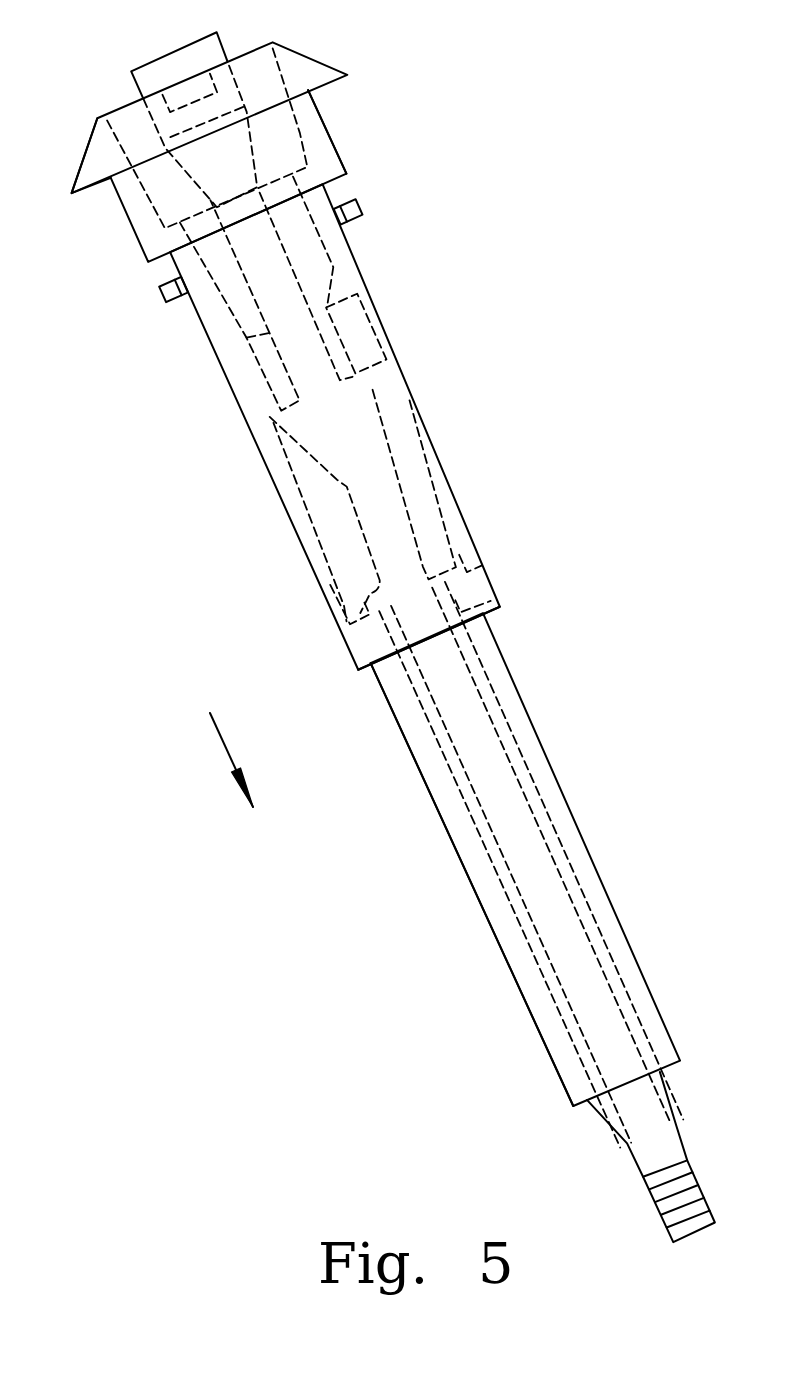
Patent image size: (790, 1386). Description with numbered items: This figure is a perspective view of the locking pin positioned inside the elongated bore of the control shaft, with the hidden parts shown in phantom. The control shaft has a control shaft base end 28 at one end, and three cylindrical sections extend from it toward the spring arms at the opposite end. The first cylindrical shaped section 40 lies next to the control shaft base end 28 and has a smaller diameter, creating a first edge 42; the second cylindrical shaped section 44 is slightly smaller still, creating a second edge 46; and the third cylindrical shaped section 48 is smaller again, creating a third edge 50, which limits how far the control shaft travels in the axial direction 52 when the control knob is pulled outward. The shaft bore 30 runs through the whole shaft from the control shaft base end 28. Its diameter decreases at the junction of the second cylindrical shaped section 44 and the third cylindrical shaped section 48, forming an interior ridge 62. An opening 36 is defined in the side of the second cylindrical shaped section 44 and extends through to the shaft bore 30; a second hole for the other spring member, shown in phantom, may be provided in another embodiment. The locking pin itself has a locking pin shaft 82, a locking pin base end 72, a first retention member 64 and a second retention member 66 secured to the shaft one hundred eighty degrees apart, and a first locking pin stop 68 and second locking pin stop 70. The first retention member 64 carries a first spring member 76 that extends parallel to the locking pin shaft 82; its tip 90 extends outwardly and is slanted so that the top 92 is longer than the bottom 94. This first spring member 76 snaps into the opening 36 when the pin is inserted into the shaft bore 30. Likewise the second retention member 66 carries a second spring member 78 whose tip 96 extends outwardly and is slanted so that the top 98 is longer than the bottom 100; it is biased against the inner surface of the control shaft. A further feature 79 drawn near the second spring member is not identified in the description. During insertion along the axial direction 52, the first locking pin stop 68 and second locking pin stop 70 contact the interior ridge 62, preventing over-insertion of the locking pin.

The control shaft base end 28 is at (100, 150).
The shaft bore 30 is at (190, 306).
The opening 36 is at (385, 337).
The first cylindrical shaped section 40 is at (316, 146).
The first edge 42 is at (350, 80).
The second cylindrical shaped section 44 is at (440, 478).
The second edge 46 is at (346, 184).
The third cylindrical shaped section 48 is at (598, 897).
The third edge 50 is at (357, 670).
The axial direction 52 is at (225, 745).
The interior ridge 62 is at (490, 600).
The first retention member 64 is at (385, 386).
The second retention member 66 is at (250, 435).
The first locking pin stop 68 is at (485, 565).
The second locking pin stop 70 is at (337, 620).
The locking pin base end 72 is at (140, 68).
The first spring member 76 is at (390, 352).
The second spring member 78 is at (268, 422).
The slot 79 is at (245, 418).
The locking pin shaft 82 is at (332, 480).
The tip of the first spring member 90 is at (370, 325).
The top of the tip 92 is at (360, 283).
The bottom of the tip 94 is at (385, 320).
The tip of the second spring member 96 is at (240, 378).
The top of the tip 98 is at (240, 344).
The bottom of the tip 100 is at (240, 412).